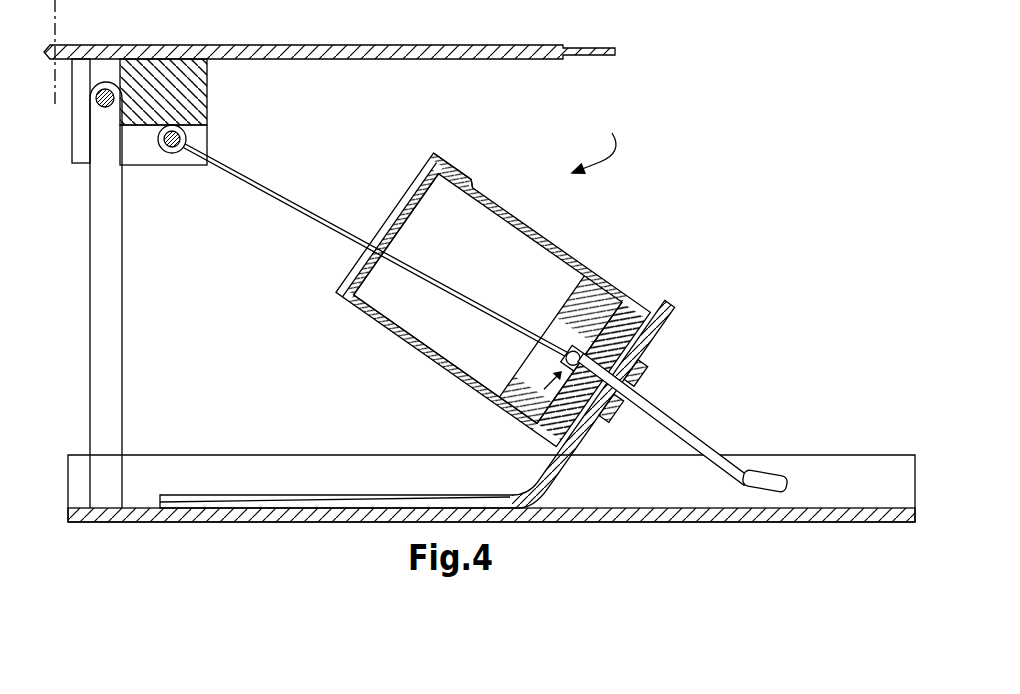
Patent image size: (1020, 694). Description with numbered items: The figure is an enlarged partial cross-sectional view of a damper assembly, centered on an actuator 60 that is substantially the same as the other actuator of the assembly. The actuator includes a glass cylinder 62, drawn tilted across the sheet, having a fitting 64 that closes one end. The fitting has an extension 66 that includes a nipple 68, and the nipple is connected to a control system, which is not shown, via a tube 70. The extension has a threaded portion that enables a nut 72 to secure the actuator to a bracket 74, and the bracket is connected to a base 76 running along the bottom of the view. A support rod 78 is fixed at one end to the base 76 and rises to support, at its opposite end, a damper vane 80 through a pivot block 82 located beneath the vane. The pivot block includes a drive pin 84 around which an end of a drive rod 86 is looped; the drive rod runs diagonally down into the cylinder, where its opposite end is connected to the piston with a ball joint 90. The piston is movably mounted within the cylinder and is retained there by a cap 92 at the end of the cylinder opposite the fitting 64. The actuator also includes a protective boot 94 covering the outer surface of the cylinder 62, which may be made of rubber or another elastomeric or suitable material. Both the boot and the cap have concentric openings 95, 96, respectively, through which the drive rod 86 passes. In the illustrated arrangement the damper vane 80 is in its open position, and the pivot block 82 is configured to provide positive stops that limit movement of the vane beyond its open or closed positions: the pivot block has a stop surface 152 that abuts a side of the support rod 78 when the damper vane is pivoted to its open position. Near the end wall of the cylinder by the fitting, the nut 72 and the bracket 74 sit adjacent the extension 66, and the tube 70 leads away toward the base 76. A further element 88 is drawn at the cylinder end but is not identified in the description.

The actuator 60 is at (594, 145).
The glass cylinder 62 is at (495, 300).
The fitting 64 is at (660, 333).
The extension 66 is at (611, 408).
The nipple 68 is at (663, 419).
The tube 70 is at (767, 478).
The nut 72 is at (636, 373).
The bracket 74 is at (340, 500).
The base 76 is at (620, 470).
The support rod 78 is at (102, 387).
The damper vane 80 is at (268, 52).
The pivot block 82 is at (187, 100).
The drive pin 84 is at (167, 153).
The drive rod 86 is at (244, 176).
The end wall 88 is at (591, 371).
The ball joint 90 is at (563, 371).
The cap 92 is at (453, 170).
The protective boot 94 is at (443, 362).
The opening 95 is at (392, 232).
The opening 96 is at (389, 230).
The stop surface 152 is at (90, 117).